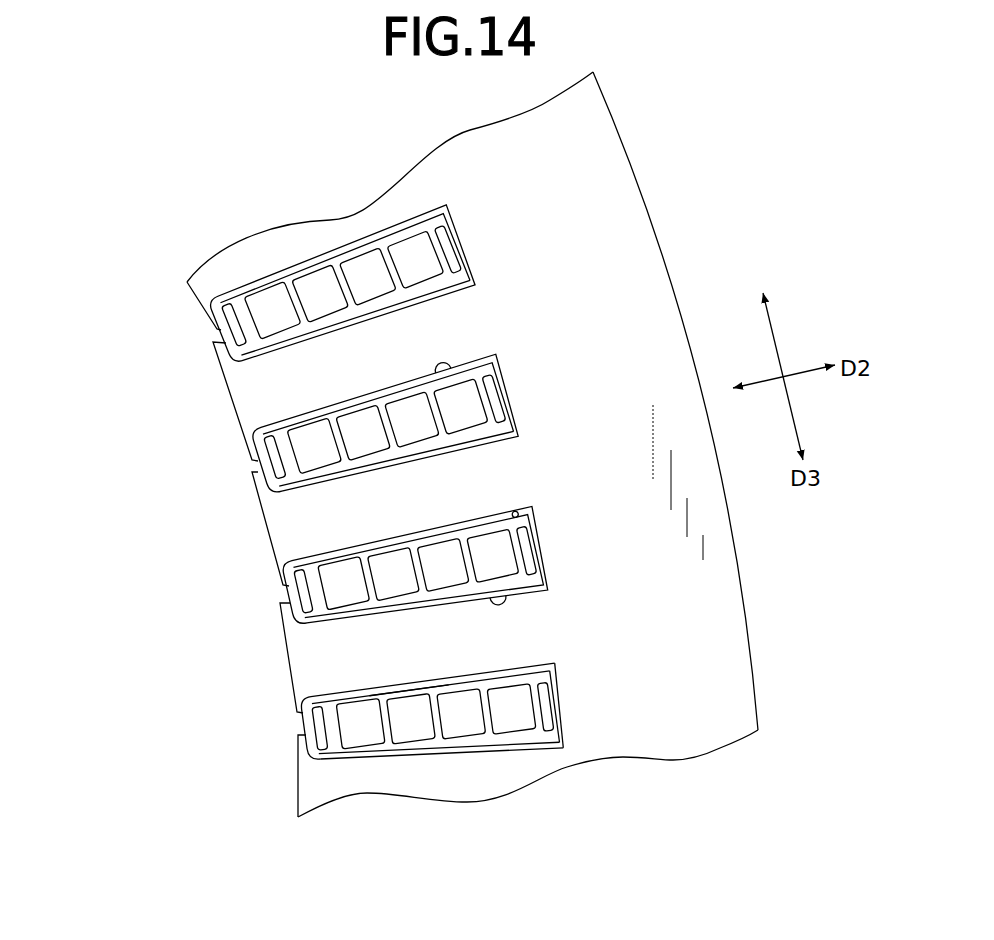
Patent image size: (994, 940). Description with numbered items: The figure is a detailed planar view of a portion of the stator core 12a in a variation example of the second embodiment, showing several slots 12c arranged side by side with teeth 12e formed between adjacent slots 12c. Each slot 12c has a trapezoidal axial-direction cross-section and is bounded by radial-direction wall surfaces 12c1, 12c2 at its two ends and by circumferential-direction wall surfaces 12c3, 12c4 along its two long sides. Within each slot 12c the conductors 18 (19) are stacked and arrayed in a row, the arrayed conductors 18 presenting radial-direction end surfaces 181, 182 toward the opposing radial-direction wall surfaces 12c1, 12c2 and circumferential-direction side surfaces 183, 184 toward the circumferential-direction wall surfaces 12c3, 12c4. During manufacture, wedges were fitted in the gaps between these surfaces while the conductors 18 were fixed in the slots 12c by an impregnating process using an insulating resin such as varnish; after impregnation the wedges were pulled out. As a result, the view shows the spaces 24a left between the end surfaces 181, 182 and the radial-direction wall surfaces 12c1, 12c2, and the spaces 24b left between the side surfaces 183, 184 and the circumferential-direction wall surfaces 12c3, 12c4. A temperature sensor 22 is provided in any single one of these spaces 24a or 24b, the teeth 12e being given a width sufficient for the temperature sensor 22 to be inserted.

The stator core 12a is at (603, 227).
The slot 12c is at (441, 377).
The radial-direction wall surface 12c1 is at (299, 713).
The radial-direction wall surface 12c2 is at (564, 686).
The circumferential-direction wall surface 12c3 is at (546, 660).
The circumferential-direction wall surface 12c4 is at (506, 758).
The tooth 12e is at (245, 400).
The conductor 18 is at (417, 450).
The coil conductor 19 is at (366, 452).
The temperature sensor 22 is at (514, 513).
The space 24a is at (497, 413).
The space 24b is at (388, 318).
The radial-direction end surface 181 is at (333, 736).
The radial-direction end surface 182 is at (545, 722).
The circumferential-direction side surface 183 is at (404, 691).
The circumferential-direction side surface 184 is at (424, 745).